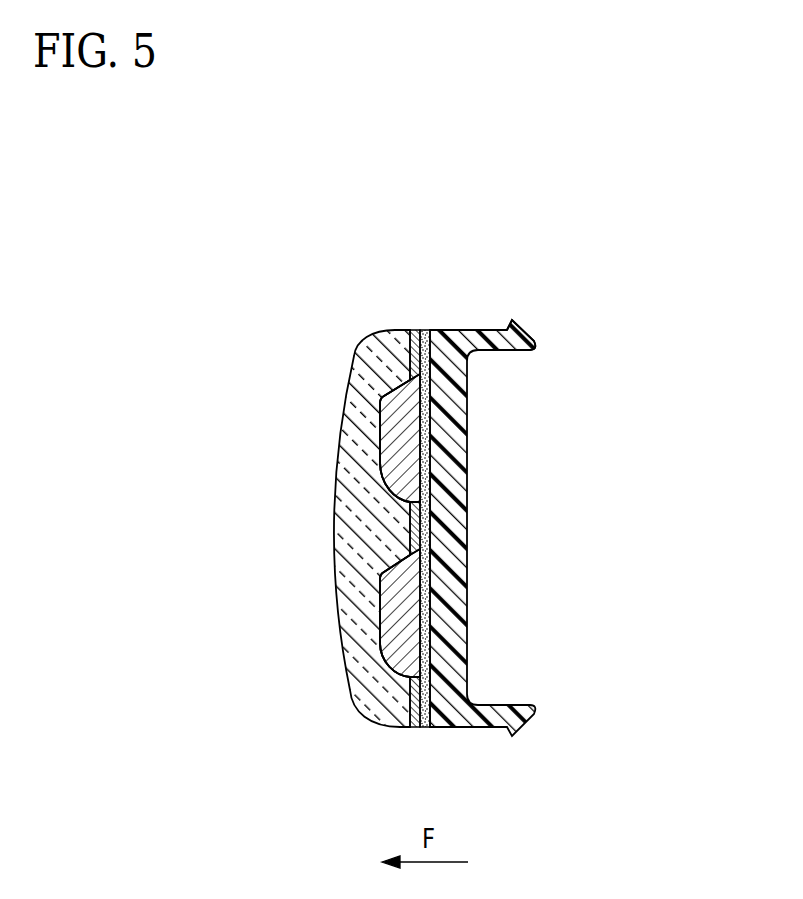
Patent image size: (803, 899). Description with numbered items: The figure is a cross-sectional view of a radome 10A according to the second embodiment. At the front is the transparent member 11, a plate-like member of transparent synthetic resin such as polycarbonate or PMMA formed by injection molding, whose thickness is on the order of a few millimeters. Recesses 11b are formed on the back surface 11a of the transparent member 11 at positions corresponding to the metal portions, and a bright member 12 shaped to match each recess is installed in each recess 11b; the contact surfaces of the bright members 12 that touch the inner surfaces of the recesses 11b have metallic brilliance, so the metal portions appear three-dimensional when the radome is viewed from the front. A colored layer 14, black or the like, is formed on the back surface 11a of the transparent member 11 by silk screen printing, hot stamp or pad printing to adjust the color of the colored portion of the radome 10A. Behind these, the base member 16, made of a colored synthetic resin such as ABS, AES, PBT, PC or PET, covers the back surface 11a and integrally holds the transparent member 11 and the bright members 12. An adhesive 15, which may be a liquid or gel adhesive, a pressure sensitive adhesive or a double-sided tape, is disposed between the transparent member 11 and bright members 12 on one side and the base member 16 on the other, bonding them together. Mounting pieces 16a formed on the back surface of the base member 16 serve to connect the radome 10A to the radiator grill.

The radome 10A is at (297, 250).
The transparent member 11 is at (357, 345).
The back surface 11a is at (404, 308).
The recesses 11b is at (388, 444).
The bright members 12 is at (400, 431).
The colored layer 14 is at (417, 329).
The adhesive 15 is at (422, 728).
The base member 16 is at (433, 530).
The mounting pieces 16a is at (531, 314).